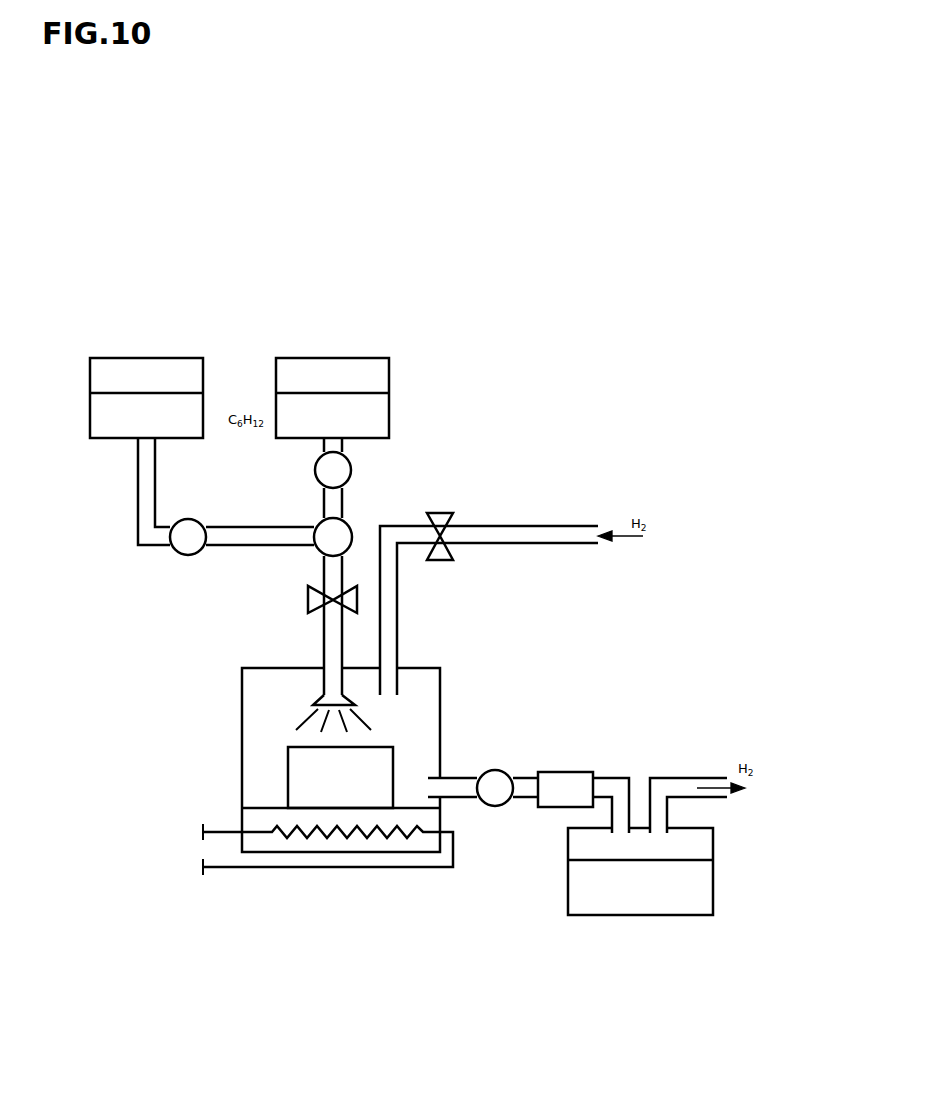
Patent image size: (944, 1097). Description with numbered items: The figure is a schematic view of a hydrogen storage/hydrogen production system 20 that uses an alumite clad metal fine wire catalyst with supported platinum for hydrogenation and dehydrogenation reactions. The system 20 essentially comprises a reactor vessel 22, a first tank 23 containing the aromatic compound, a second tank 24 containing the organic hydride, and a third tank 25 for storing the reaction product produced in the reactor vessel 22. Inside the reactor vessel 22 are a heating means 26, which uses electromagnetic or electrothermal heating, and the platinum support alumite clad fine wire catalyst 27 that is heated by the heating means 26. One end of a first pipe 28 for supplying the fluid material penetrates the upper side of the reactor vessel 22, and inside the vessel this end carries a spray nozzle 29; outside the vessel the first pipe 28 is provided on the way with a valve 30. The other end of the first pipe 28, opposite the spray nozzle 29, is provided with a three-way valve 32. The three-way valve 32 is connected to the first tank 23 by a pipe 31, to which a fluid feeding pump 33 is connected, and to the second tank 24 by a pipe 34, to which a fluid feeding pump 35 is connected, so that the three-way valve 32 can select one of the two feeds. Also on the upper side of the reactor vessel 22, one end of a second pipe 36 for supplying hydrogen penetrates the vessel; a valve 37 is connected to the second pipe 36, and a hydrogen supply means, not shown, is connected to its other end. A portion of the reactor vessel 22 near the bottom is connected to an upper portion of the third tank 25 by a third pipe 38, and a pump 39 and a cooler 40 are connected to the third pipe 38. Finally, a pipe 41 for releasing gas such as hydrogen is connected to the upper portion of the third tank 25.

The hydrogen storage/hydrogen production system 20 is at (558, 400).
The reactor vessel 22 is at (418, 668).
The first tank 23 is at (148, 358).
The second tank 24 is at (336, 358).
The third tank 25 is at (713, 893).
The heating means 26 is at (252, 823).
The platinum support alumite clad fine wire catalyst 27 is at (288, 755).
The first pipe 28 is at (323, 576).
The spray nozzle 29 is at (313, 703).
The valve 30 is at (310, 604).
The pipe 31 is at (278, 527).
The three-way valve 32 is at (348, 522).
The fluid feeding pump 33 is at (185, 556).
The pipe 34 is at (345, 452).
The fluid feeding pump 35 is at (316, 468).
The second pipe 36 is at (398, 602).
The valve 37 is at (440, 512).
The third pipe 38 is at (470, 778).
The pump 39 is at (497, 806).
The cooler 40 is at (563, 772).
The pipe 41 is at (683, 778).